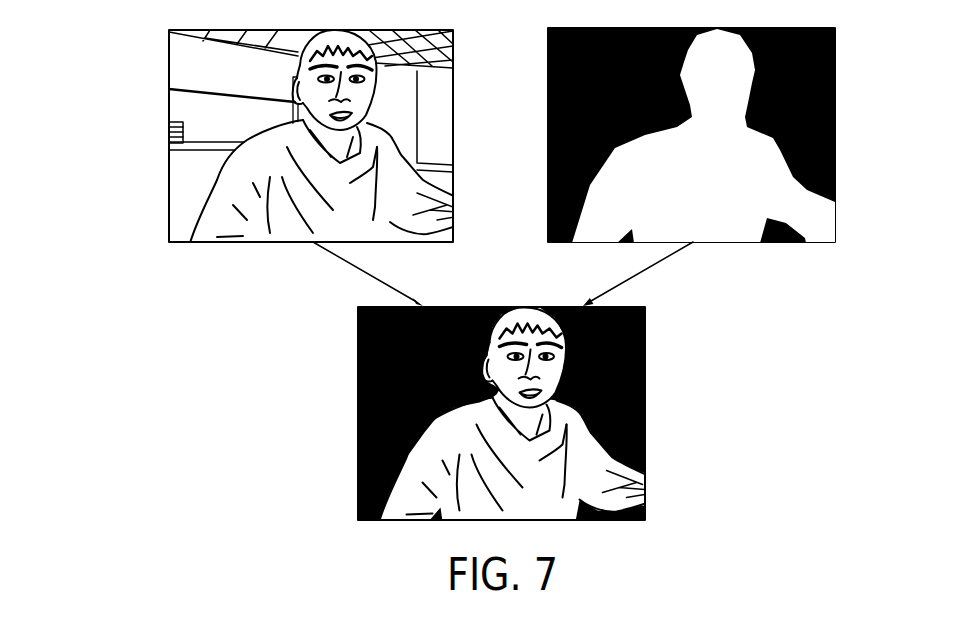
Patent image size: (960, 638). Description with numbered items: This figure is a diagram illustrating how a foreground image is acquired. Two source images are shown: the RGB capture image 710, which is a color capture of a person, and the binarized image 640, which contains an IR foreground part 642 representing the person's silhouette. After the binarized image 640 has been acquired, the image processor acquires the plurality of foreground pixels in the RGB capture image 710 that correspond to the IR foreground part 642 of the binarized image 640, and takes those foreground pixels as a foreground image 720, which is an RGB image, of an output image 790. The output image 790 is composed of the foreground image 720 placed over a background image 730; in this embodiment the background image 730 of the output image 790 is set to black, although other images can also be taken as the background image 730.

The RGB capture image 710 is at (158, 117).
The binarized image 640 is at (855, 117).
The IR foreground part 642 is at (758, 192).
The background image 730 is at (358, 338).
The foreground image 720 is at (637, 505).
The output image 790 is at (340, 406).